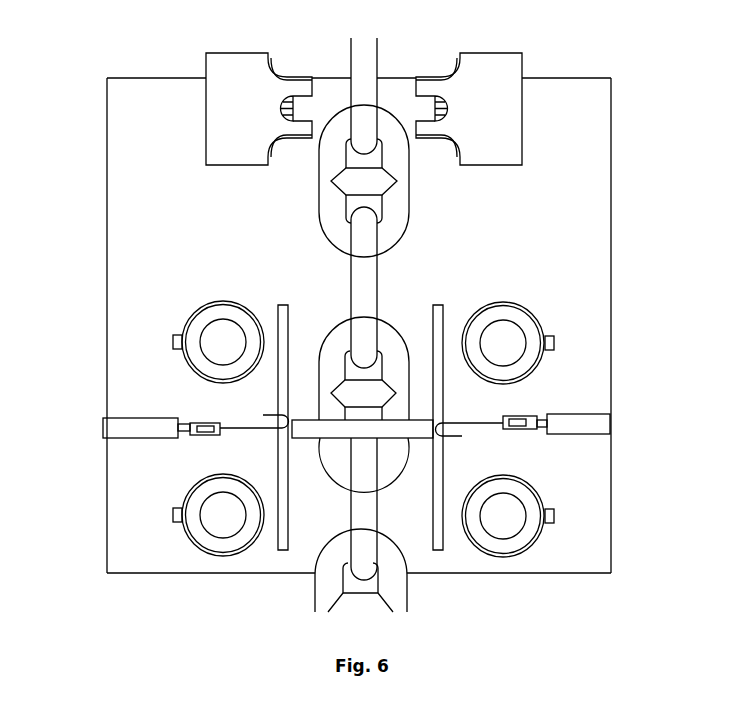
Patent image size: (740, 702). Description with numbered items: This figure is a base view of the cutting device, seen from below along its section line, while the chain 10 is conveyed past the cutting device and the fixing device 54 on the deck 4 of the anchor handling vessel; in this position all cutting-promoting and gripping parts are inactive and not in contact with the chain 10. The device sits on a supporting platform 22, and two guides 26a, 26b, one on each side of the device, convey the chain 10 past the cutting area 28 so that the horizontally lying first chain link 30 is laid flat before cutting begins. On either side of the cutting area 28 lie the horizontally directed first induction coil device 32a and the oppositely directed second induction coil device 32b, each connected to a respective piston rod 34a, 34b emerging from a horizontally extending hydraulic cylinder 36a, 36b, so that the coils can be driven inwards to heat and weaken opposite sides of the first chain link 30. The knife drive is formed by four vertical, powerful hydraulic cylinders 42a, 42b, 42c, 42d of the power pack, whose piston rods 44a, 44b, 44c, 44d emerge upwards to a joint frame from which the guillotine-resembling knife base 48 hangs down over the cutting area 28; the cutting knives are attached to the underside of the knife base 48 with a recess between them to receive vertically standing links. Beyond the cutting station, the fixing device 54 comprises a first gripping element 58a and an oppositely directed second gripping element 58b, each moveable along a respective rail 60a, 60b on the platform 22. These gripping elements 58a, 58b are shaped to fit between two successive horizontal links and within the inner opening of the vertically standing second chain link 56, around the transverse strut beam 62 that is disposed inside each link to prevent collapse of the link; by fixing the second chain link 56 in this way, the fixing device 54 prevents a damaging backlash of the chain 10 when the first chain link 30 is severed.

The deck 4 is at (60, 300).
The chain 10 is at (335, 163).
The supporting platform 22 is at (140, 170).
The guide 26a is at (281, 556).
The guide 26b is at (287, 306).
The cutting area 28 is at (386, 456).
The first chain link 30 is at (386, 340).
The first induction coil device 32a is at (273, 410).
The second induction coil device 32b is at (455, 437).
The piston rod 34a is at (187, 420).
The piston rod 34b is at (540, 418).
The hydraulic cylinder 36a is at (112, 428).
The hydraulic cylinder 36b is at (612, 422).
The hydraulic cylinder 42a is at (190, 545).
The hydraulic cylinder 42b is at (532, 542).
The hydraulic cylinder 42c is at (192, 313).
The hydraulic cylinder 42d is at (525, 305).
The piston rod 44a is at (221, 518).
The piston rod 44b is at (502, 522).
The piston rod 44c is at (224, 333).
The piston rod 44d is at (499, 335).
The knife base 48 is at (303, 432).
The fixing device 54 is at (415, 88).
The second chain link 56 is at (358, 58).
The first gripping element 58a is at (223, 66).
The second gripping element 58b is at (505, 66).
The rail 60a is at (298, 103).
The rail 60b is at (431, 103).
The strut beam 62 is at (377, 176).